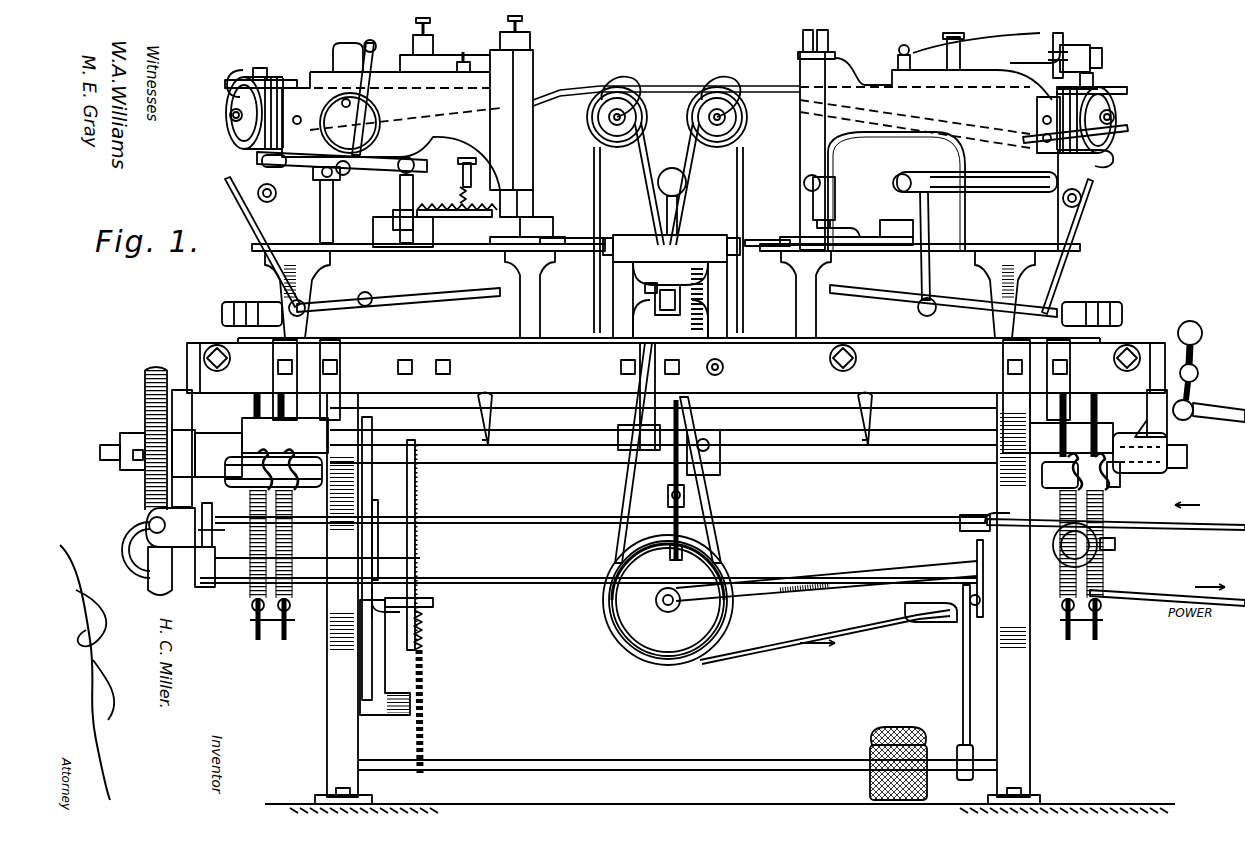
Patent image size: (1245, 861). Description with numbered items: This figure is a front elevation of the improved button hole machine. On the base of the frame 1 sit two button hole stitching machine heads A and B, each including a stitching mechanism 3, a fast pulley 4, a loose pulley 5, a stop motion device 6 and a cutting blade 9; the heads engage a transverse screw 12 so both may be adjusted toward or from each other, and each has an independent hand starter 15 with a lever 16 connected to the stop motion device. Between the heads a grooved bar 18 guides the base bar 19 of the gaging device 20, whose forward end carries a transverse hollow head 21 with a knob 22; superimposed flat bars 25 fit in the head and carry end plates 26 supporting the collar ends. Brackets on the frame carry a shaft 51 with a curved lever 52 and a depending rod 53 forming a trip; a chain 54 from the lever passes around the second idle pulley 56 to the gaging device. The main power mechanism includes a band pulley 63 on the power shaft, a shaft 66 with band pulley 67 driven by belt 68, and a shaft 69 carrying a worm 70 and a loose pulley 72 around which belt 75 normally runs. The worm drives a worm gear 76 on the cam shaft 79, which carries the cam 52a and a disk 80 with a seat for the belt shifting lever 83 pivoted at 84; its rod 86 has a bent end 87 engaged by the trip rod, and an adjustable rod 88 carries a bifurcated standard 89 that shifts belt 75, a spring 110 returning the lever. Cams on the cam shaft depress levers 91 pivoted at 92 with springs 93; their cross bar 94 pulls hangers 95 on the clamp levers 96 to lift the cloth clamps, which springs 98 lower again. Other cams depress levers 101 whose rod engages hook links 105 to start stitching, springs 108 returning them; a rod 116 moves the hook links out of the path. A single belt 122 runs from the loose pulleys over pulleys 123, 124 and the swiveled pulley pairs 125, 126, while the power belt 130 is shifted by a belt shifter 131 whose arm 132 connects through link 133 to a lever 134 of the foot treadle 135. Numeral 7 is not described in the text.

The frame 1 is at (669, 293).
The stitching mechanism 3 is at (533, 203).
The fast pulley 4 is at (290, 80).
The loose pulley 5 is at (232, 120).
The stop motion device 6 is at (258, 160).
The main beam 7 is at (676, 368).
The cutting blade 9 is at (545, 226).
The transverse screw 12 is at (1200, 348).
The hand starter 15 is at (244, 206).
The lever 16 is at (282, 283).
The grooved bar 18 is at (655, 300).
The base bar 19 is at (645, 286).
The gaging device 20 is at (670, 297).
The transverse hollow head 21 is at (671, 246).
The knob 22 is at (680, 172).
The superimposed flat bars 25 is at (758, 241).
The end plate 26 is at (585, 230).
The shaft 51 is at (575, 440).
The curved lever 52 is at (668, 478).
The cam 52a is at (695, 430).
The depending rod 53 is at (428, 492).
The chain 54 is at (705, 280).
The second idle pulley 56 is at (645, 382).
The band pulley 63 is at (1112, 546).
The shaft 66 is at (668, 600).
The band pulley 67 is at (688, 652).
The belt 68 is at (796, 643).
The shaft 69 is at (150, 520).
The worm 70 is at (140, 560).
The loose pulley 72 is at (135, 552).
The belt 75 is at (528, 583).
The worm gear 76 is at (150, 393).
The cam shaft 79 is at (528, 465).
The disk 80 is at (372, 424).
The belt shifting lever 83 is at (390, 513).
The pivot 84 is at (432, 686).
The rod 86 is at (395, 605).
The bent end 87 is at (445, 600).
The adjustable rod 88 is at (294, 562).
The bifurcated standard 89 is at (212, 506).
The lever 91 is at (252, 408).
The pivot 92 is at (243, 430).
The spring 93 is at (262, 528).
The cross bar 94 is at (663, 433).
The hanger 95 is at (500, 315).
The lever 96 is at (440, 296).
The spring 98 is at (445, 194).
The lever 101 is at (275, 393).
The hook link 105 is at (494, 420).
The spring 108 is at (283, 612).
The spring 110 is at (440, 640).
The rod 116 is at (725, 365).
The belt 122 is at (605, 90).
The pulley 123 is at (640, 110).
The pulley 124 is at (712, 92).
The pulley pair 125 is at (290, 82).
The pulley pair 126 is at (1100, 90).
The power belt 130 is at (1116, 527).
The belt shifter 131 is at (990, 520).
The arm 132 is at (952, 618).
The link 133 is at (935, 618).
The lever 134 is at (963, 698).
The foot treadle 135 is at (915, 745).
The machine head A is at (528, 131).
The machine head B is at (941, 165).